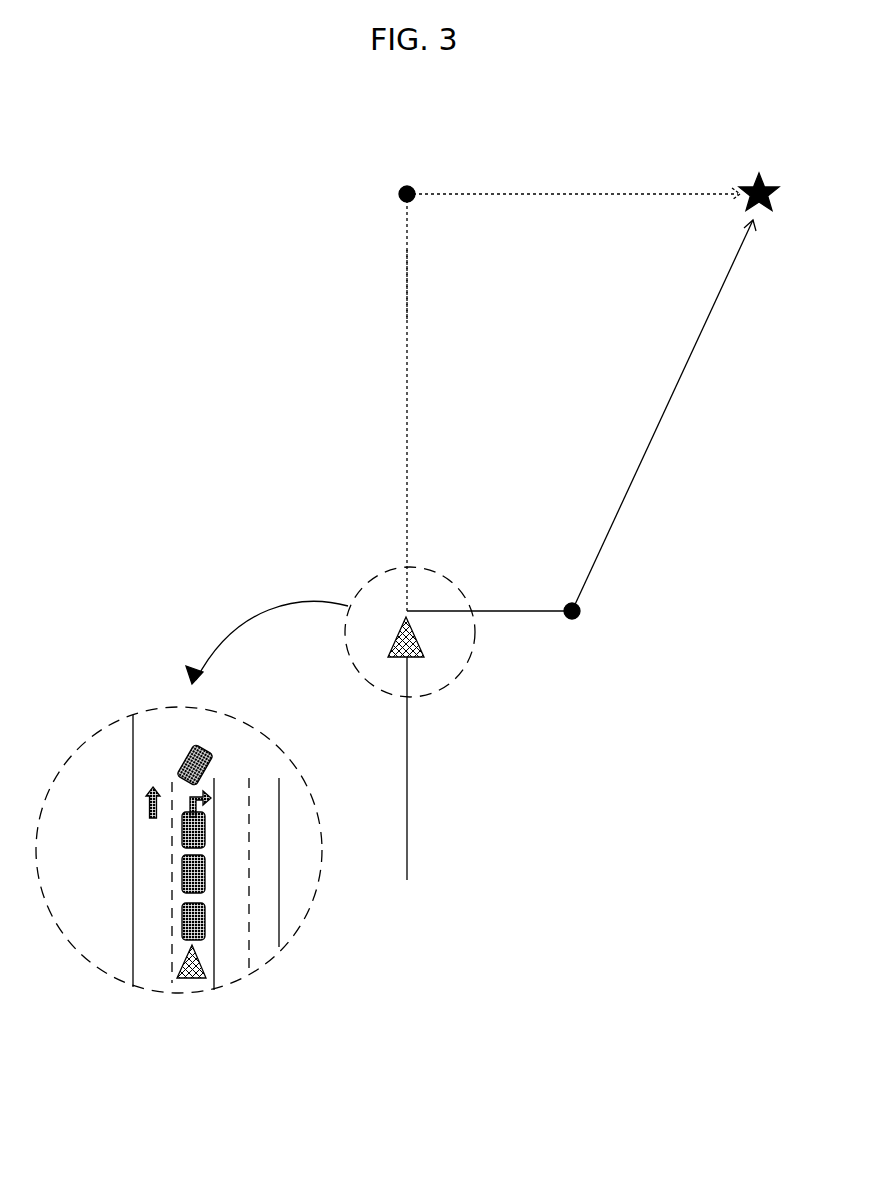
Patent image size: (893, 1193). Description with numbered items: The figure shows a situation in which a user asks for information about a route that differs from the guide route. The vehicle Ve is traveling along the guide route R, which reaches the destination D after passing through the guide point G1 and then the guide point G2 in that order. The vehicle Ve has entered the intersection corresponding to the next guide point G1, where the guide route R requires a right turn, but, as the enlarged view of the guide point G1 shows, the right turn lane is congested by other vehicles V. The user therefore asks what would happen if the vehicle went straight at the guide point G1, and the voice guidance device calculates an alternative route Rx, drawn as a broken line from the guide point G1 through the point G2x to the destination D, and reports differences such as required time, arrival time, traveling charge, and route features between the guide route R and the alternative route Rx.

The projected waypoint G2x is at (563, 382).
The destination D is at (762, 178).
The alternative route Rx is at (406, 284).
The guide point G2 is at (581, 426).
The guide point G1 is at (466, 663).
The vehicle Ve is at (396, 638).
The guide route R is at (407, 822).
The other vehicles V is at (206, 922).